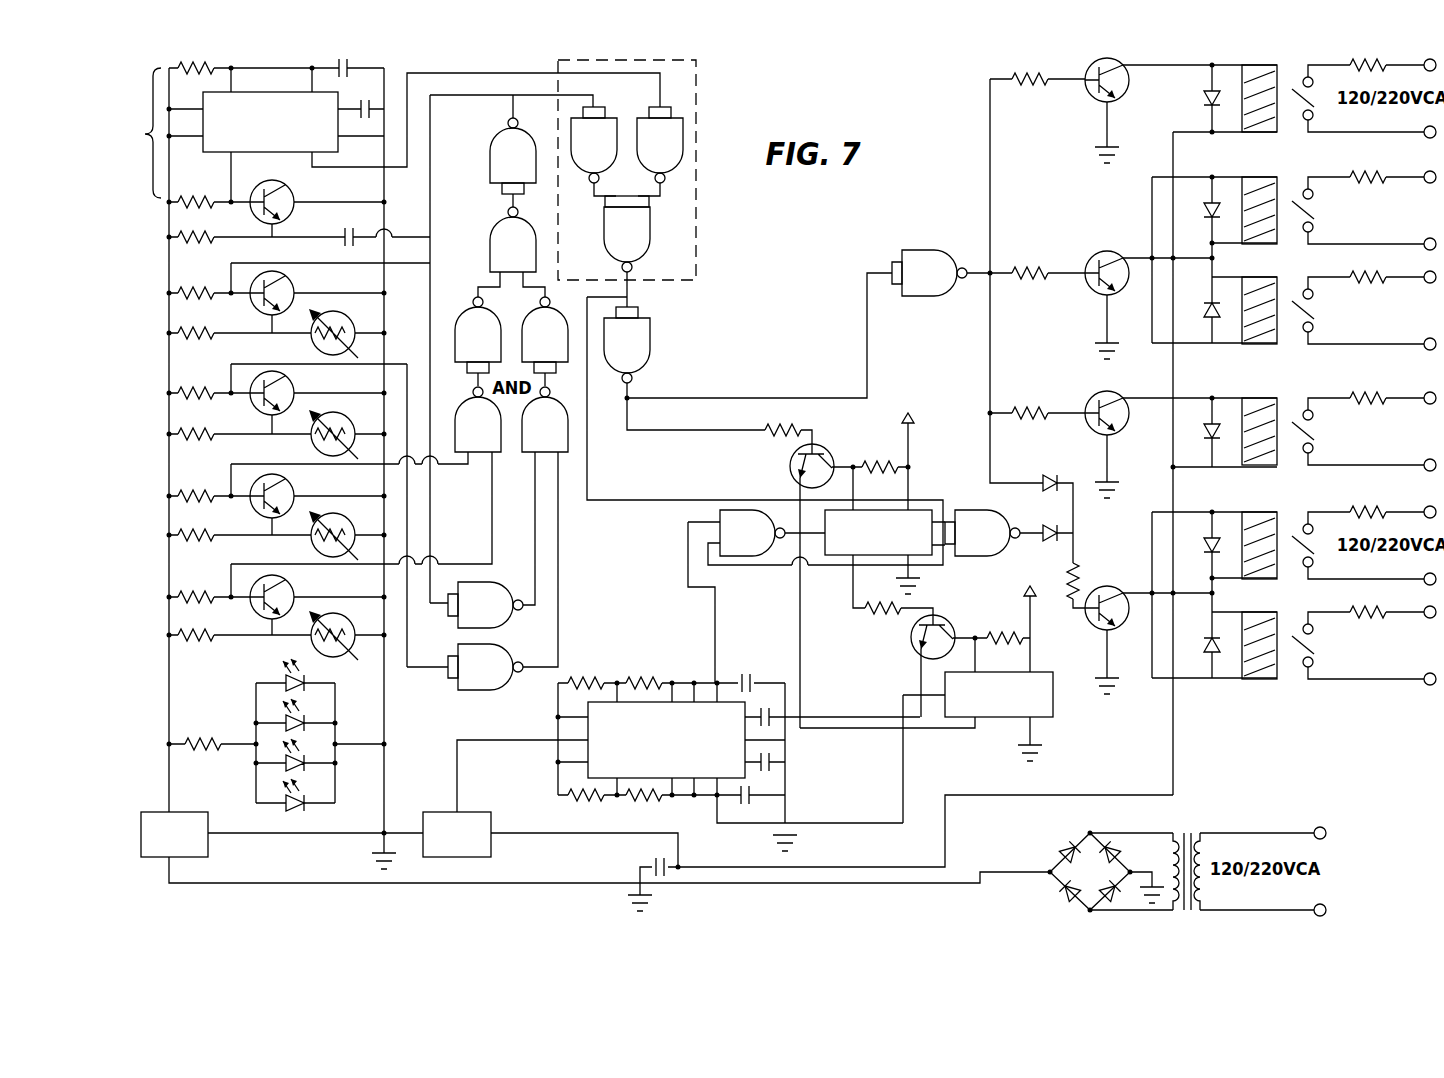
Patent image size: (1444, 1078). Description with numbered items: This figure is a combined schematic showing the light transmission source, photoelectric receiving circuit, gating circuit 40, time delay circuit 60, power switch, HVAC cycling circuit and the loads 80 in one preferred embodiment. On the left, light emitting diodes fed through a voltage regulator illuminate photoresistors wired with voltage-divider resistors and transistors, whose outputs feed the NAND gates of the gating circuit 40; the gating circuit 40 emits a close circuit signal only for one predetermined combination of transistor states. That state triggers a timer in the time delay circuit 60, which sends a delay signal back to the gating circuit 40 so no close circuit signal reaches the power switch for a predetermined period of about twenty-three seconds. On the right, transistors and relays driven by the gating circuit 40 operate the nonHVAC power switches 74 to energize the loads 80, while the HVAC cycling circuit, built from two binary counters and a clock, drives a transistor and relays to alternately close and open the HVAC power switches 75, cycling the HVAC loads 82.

The gating circuit 40 is at (648, 170).
The time delay circuit 60 is at (232, 133).
The nonHVAC power switch 74 is at (1317, 265).
The HVAC power switch 75 is at (1317, 595).
The loads 80 is at (1371, 386).
The HVAC loads 82 is at (1371, 600).